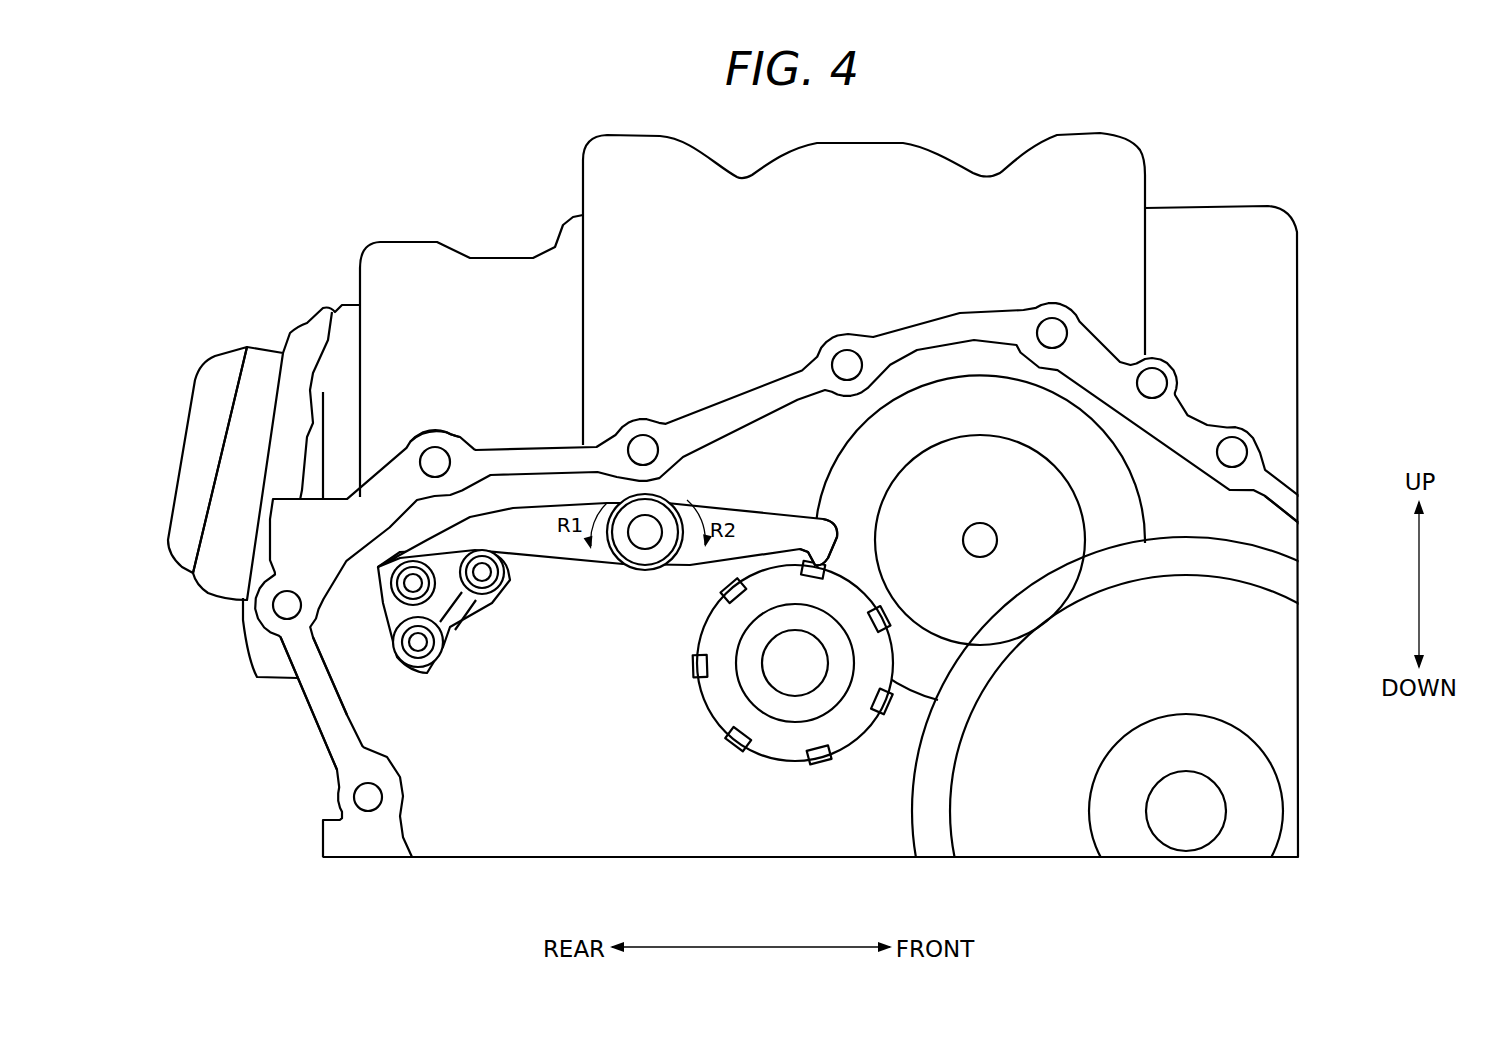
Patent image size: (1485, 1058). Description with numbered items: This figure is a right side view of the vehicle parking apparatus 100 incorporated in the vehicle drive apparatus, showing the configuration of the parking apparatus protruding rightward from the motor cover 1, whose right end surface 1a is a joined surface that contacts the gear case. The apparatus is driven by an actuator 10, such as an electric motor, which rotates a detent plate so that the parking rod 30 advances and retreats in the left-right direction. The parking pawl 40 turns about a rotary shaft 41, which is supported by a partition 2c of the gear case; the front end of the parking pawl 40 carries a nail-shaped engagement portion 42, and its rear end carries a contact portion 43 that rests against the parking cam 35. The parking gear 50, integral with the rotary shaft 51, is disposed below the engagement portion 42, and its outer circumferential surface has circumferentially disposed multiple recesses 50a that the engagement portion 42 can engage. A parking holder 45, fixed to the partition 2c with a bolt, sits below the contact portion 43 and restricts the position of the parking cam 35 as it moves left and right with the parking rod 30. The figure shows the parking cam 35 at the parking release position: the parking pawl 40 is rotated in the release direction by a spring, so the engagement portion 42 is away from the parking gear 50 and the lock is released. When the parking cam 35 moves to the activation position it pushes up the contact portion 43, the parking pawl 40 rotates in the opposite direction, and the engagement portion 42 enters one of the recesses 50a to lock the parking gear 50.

The motor cover 1 is at (1188, 410).
The right end surface of the motor cover 1a is at (1275, 498).
The partition 2c is at (377, 718).
The actuator 10 is at (183, 431).
The parking rod 30 is at (406, 578).
The parking cam 35 is at (400, 597).
The parking pawl 40 is at (582, 566).
The rotary shaft 41 is at (633, 547).
The engagement portion 42 is at (835, 548).
The contact portion 43 is at (446, 593).
The parking holder 45 is at (470, 605).
The parking gear 50 is at (690, 666).
The recesses 50a is at (813, 752).
The rotary shaft 51 is at (766, 677).
The vehicle parking apparatus 100 is at (543, 493).